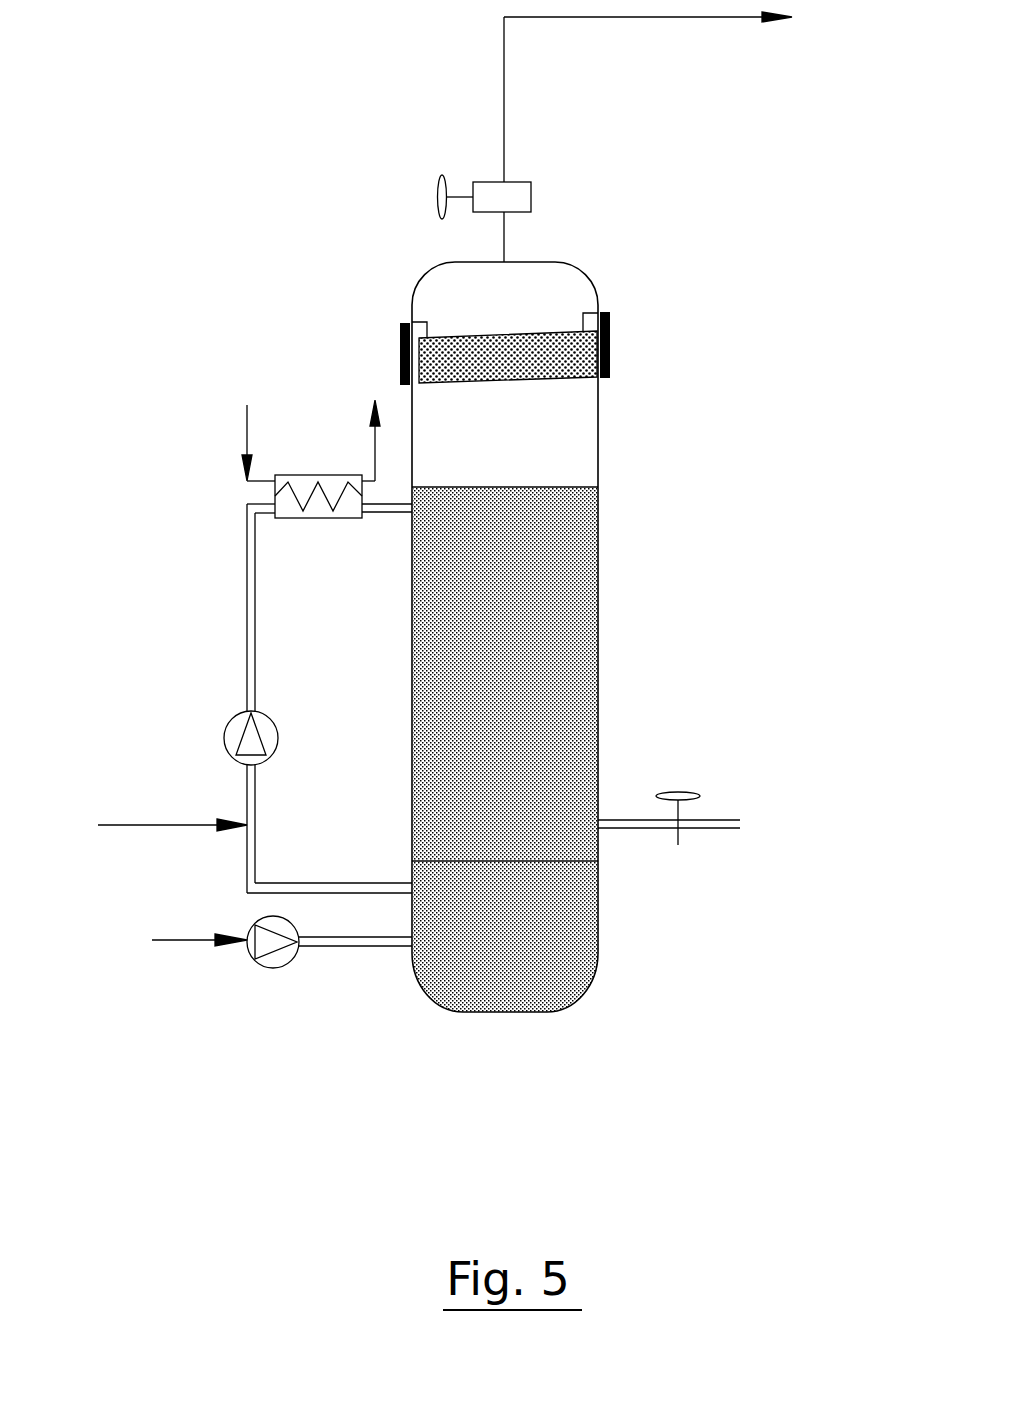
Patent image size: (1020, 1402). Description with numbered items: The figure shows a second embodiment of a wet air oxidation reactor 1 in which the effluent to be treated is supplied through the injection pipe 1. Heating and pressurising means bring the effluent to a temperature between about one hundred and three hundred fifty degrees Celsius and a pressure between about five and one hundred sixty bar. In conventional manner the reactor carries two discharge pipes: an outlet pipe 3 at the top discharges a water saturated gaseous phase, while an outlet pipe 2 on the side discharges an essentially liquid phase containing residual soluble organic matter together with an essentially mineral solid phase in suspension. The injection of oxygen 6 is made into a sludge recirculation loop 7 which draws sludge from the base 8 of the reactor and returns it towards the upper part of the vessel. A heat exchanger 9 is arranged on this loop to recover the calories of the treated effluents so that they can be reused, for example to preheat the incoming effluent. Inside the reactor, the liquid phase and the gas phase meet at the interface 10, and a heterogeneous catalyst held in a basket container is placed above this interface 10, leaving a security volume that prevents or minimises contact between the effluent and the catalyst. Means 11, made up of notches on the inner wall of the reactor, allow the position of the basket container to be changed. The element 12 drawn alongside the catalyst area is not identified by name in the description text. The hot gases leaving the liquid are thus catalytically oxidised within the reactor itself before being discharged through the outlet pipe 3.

The injection pipe 1 is at (628, 645).
The outlet pipe 2 is at (617, 818).
The outlet pipe 3 is at (504, 227).
The injection of oxygen 6 is at (153, 822).
The sludge recirculation loop 7 is at (247, 623).
The base 8 is at (555, 983).
The heat exchanger 9 is at (312, 475).
The interface 10 is at (520, 487).
The means made up of notches 11 is at (417, 313).
The filter tray 12 is at (612, 347).